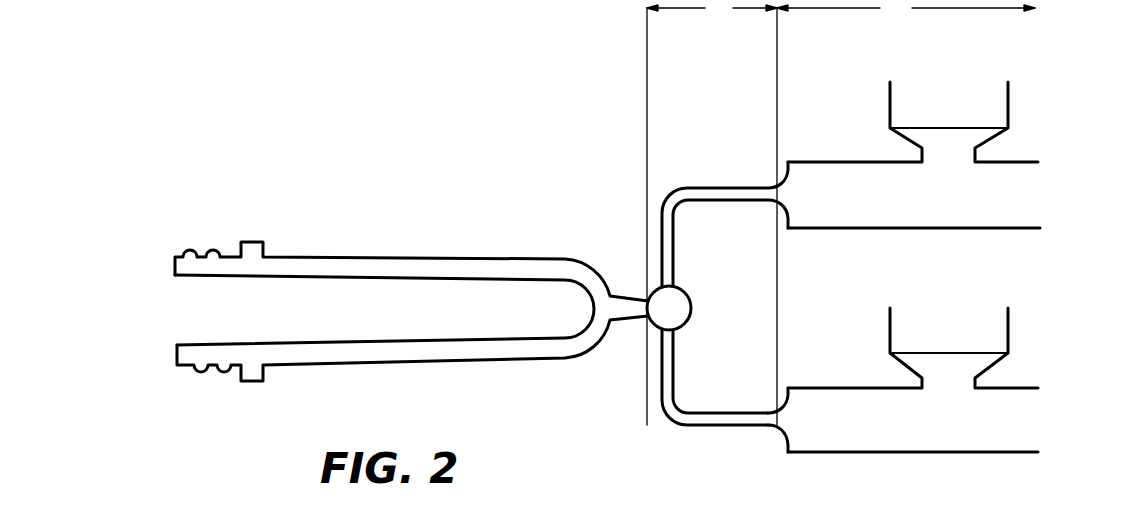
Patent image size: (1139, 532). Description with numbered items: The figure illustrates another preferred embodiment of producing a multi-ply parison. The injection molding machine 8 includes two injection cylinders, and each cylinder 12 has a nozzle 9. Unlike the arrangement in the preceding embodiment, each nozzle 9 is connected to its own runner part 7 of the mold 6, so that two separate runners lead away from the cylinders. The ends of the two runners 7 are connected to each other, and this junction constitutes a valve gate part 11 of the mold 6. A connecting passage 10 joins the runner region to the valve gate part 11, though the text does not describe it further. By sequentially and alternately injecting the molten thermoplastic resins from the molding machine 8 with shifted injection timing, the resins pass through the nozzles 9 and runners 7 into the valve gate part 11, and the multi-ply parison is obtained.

The mold 6 is at (348, 256).
The runner part 7 is at (712, 212).
The injection molding machine 8 is at (906, 11).
The nozzle 9 is at (772, 435).
The connecting tube 10 is at (703, 428).
The valve gate part 11 is at (656, 323).
The injection cylinder 12 is at (840, 455).